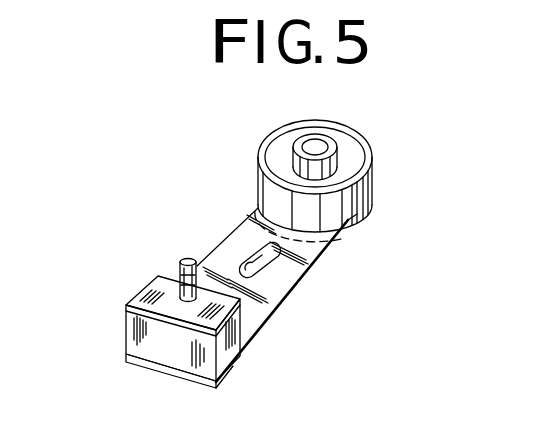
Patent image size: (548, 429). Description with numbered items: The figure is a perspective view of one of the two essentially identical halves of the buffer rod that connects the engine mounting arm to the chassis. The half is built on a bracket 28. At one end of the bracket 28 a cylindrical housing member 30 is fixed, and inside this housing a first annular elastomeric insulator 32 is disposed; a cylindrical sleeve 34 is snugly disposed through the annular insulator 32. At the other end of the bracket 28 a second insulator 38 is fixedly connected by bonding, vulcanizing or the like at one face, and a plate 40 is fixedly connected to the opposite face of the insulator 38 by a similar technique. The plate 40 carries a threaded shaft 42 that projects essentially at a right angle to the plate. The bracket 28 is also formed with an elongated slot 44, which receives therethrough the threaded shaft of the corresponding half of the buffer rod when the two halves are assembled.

The bracket 28 is at (240, 353).
The cylindrical housing member 30 is at (345, 208).
The first annular elastomeric insulator 32 is at (344, 166).
The cylindrical sleeve 34 is at (293, 152).
The second insulator 38 is at (150, 342).
The plate 40 is at (158, 304).
The threaded shaft 42 is at (187, 261).
The elongated slot 44 is at (255, 258).